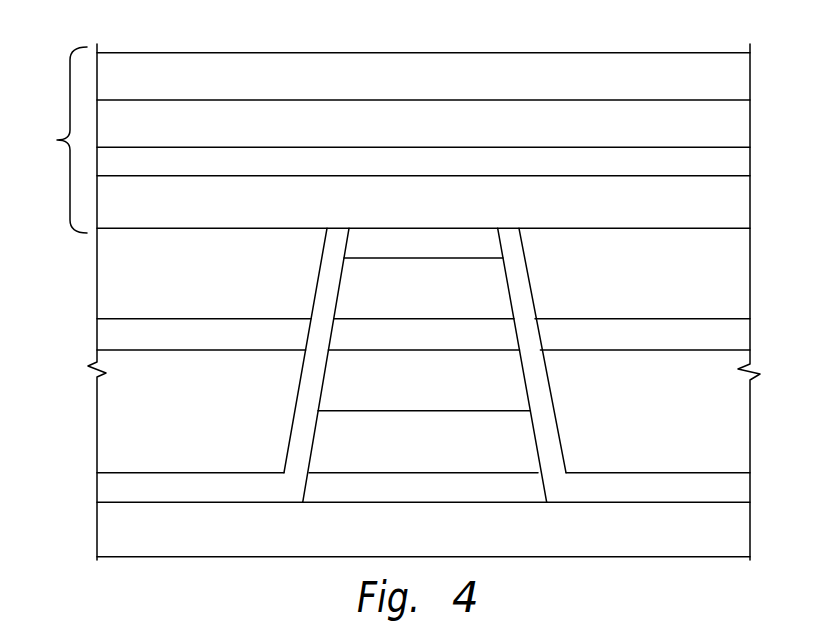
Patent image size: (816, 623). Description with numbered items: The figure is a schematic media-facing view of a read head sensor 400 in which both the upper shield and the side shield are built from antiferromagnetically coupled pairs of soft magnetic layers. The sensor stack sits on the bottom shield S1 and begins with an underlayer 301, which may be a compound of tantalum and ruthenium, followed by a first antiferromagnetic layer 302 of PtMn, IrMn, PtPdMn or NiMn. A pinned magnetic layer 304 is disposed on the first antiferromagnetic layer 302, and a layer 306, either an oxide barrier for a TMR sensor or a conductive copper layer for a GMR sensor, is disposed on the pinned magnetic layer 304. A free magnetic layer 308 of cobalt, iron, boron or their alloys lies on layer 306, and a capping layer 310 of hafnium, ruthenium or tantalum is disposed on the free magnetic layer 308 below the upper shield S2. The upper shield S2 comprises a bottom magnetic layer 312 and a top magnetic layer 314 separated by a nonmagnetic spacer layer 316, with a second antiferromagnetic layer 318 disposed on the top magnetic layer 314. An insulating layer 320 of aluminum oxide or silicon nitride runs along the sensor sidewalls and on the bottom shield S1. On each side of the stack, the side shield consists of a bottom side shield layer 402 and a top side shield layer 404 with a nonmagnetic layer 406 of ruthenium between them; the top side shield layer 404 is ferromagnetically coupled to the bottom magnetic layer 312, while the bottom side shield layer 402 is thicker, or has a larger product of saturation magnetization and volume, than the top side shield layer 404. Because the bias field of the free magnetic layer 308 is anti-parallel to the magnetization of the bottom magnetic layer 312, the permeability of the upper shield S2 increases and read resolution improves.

The read head sensor 400 is at (196, 583).
The underlayer 301 is at (442, 498).
The first antiferromagnetic layer 302 is at (442, 454).
The pinned magnetic layer 304 is at (442, 392).
The layer 306 is at (442, 346).
The free magnetic layer 308 is at (442, 304).
The capping layer 310 is at (442, 254).
The bottom magnetic layer 312 is at (442, 212).
The top magnetic layer 314 is at (442, 134).
The nonmagnetic spacer layer 316 is at (442, 174).
The second antiferromagnetic layer 318 is at (442, 88).
The insulating layer 320 is at (194, 498).
The bottom side shield layer 402 is at (194, 422).
The top side shield layer 404 is at (194, 286).
The nonmagnetic layer 406 is at (194, 346).
The bottom shield S1 is at (437, 544).
The upper shield S2 is at (55, 140).